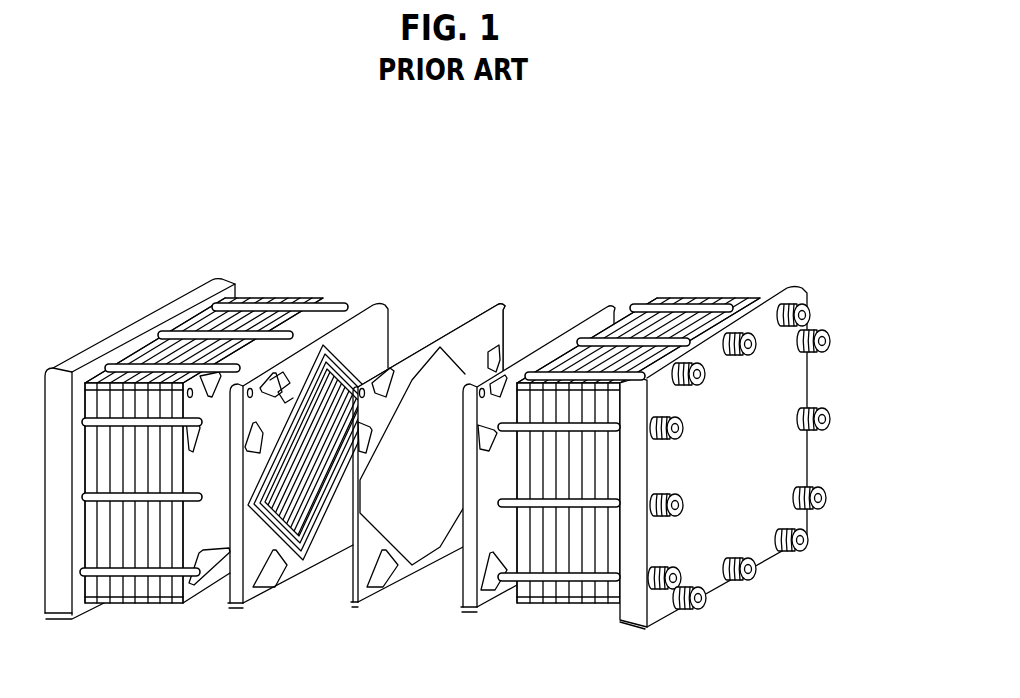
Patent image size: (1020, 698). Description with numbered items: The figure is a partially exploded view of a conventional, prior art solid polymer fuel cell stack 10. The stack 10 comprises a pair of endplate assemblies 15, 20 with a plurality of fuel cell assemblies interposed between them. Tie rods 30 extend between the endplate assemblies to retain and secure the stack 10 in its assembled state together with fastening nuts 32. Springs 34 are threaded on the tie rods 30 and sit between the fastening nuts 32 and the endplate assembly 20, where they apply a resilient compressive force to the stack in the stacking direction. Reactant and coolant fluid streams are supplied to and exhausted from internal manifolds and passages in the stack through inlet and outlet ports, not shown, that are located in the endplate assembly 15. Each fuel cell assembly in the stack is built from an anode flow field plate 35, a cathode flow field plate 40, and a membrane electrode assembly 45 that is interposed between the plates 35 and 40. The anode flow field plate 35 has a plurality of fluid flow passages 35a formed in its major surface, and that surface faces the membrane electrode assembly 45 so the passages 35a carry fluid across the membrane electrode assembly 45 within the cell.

The solid polymer fuel cell stack 10 is at (240, 208).
The endplate assembly 15 is at (100, 345).
The endplate assembly 20 is at (785, 288).
The tie rods 30 is at (250, 333).
The fastening nuts 32 is at (827, 413).
The springs 34 is at (730, 580).
The anode flow field plate 35 is at (373, 305).
The fluid flow passages 35a is at (330, 543).
The cathode flow field plate 40 is at (607, 307).
The membrane electrode assembly 45 is at (497, 305).